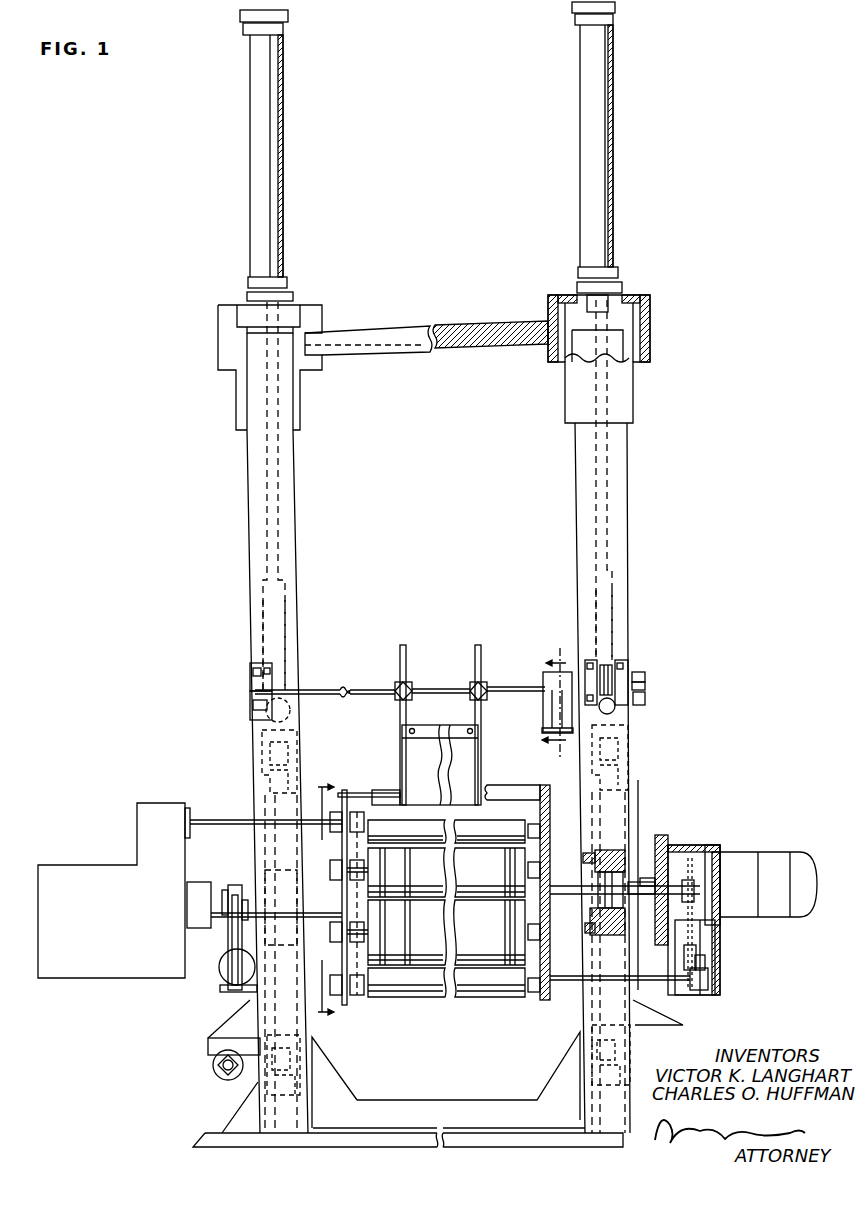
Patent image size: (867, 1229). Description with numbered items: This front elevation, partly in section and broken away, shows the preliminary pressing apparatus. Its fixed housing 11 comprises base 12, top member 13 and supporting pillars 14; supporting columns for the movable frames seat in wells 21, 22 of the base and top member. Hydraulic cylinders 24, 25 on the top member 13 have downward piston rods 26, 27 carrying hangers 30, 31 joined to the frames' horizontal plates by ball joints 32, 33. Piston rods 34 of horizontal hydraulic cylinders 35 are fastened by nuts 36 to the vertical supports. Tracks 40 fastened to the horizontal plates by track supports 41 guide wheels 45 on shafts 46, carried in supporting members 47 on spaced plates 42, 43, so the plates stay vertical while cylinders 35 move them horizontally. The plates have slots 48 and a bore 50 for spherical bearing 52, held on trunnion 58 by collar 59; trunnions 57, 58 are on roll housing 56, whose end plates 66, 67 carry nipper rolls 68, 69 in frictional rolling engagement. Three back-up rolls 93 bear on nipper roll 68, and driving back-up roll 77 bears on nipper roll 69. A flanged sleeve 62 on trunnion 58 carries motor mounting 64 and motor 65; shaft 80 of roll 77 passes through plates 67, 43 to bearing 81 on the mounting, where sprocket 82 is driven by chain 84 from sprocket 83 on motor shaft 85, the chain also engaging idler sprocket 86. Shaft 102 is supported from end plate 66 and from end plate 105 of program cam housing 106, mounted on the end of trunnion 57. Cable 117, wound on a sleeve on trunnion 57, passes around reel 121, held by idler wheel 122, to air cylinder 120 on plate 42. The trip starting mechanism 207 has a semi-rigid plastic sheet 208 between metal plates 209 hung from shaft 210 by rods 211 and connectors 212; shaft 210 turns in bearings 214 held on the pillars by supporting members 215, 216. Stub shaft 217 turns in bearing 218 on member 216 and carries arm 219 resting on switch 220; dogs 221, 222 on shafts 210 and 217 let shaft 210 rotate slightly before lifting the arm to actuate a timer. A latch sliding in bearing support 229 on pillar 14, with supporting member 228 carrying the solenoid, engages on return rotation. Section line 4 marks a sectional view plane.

The section line 4 is at (332, 899).
The fixed housing 11 is at (468, 327).
The base 12 is at (440, 1106).
The top member 13 is at (407, 332).
The supporting pillars 14 is at (299, 520).
The wells 21 is at (258, 1112).
The wells 22 is at (252, 370).
The hydraulic cylinder 24 is at (252, 183).
The hydraulic cylinder 25 is at (582, 183).
The piston rod 26 is at (280, 510).
The piston rod 27 is at (612, 498).
The hanger 30 is at (285, 637).
The hanger 31 is at (612, 592).
The ball joint 32 is at (290, 710).
The ball joint 33 is at (613, 714).
The piston rods 34 is at (222, 1060).
The horizontal hydraulic cylinders 35 is at (215, 1075).
The nuts 36 is at (213, 1067).
The track 40 is at (270, 742).
The track support 41 is at (262, 737).
The spaced plate 42 is at (262, 805).
The spaced plate 43 is at (624, 812).
The wheels 45 is at (290, 755).
The shafts 46 is at (290, 760).
The supporting members 47 is at (262, 772).
The slots 48 is at (268, 845).
The bore 50 is at (605, 851).
The spherical bearing 52 is at (598, 880).
The roll housing 56 is at (498, 787).
The trunnion 57 is at (315, 896).
The trunnion 58 is at (625, 889).
The collar 59 is at (634, 906).
The flanged sleeve 62 is at (648, 868).
The motor mounting 64 is at (700, 845).
The motor 65 is at (745, 858).
The end plate 66 is at (372, 795).
The end plate 67 is at (545, 798).
The nipper roll 68 is at (436, 872).
The nipper roll 69 is at (436, 932).
The driving back-up roll 77 is at (430, 998).
The shaft 80 is at (574, 982).
The bearing 81 is at (706, 978).
The sprocket 82 is at (695, 994).
The sprocket 83 is at (692, 873).
The chain 84 is at (690, 958).
The shaft 85 is at (688, 891).
The idler sprocket 86 is at (700, 958).
The back-up rolls 93 is at (495, 823).
The shaft 102 is at (208, 826).
The end plate 105 is at (186, 809).
The program cam housing 106 is at (60, 866).
The cable 117 is at (245, 928).
The air cylinder 120 is at (225, 980).
The reel 121 is at (230, 958).
The idler wheel 122 is at (230, 940).
The trip starting mechanism 207 is at (398, 674).
The sheet 208 is at (408, 755).
The plates 209 is at (445, 727).
The shaft 210 is at (350, 688).
The rods 211 is at (476, 658).
The connectors 212 is at (474, 688).
The bearings 214 is at (250, 689).
The supporting member 215 is at (250, 667).
The supporting member 216 is at (622, 655).
The stub shaft 217 is at (646, 679).
The bearing 218 is at (626, 668).
The arm 219 is at (646, 686).
The switch 220 is at (646, 700).
The dog 221 is at (596, 665).
The dog 222 is at (607, 665).
The supporting member 228 is at (545, 736).
The bearing support 229 is at (547, 680).